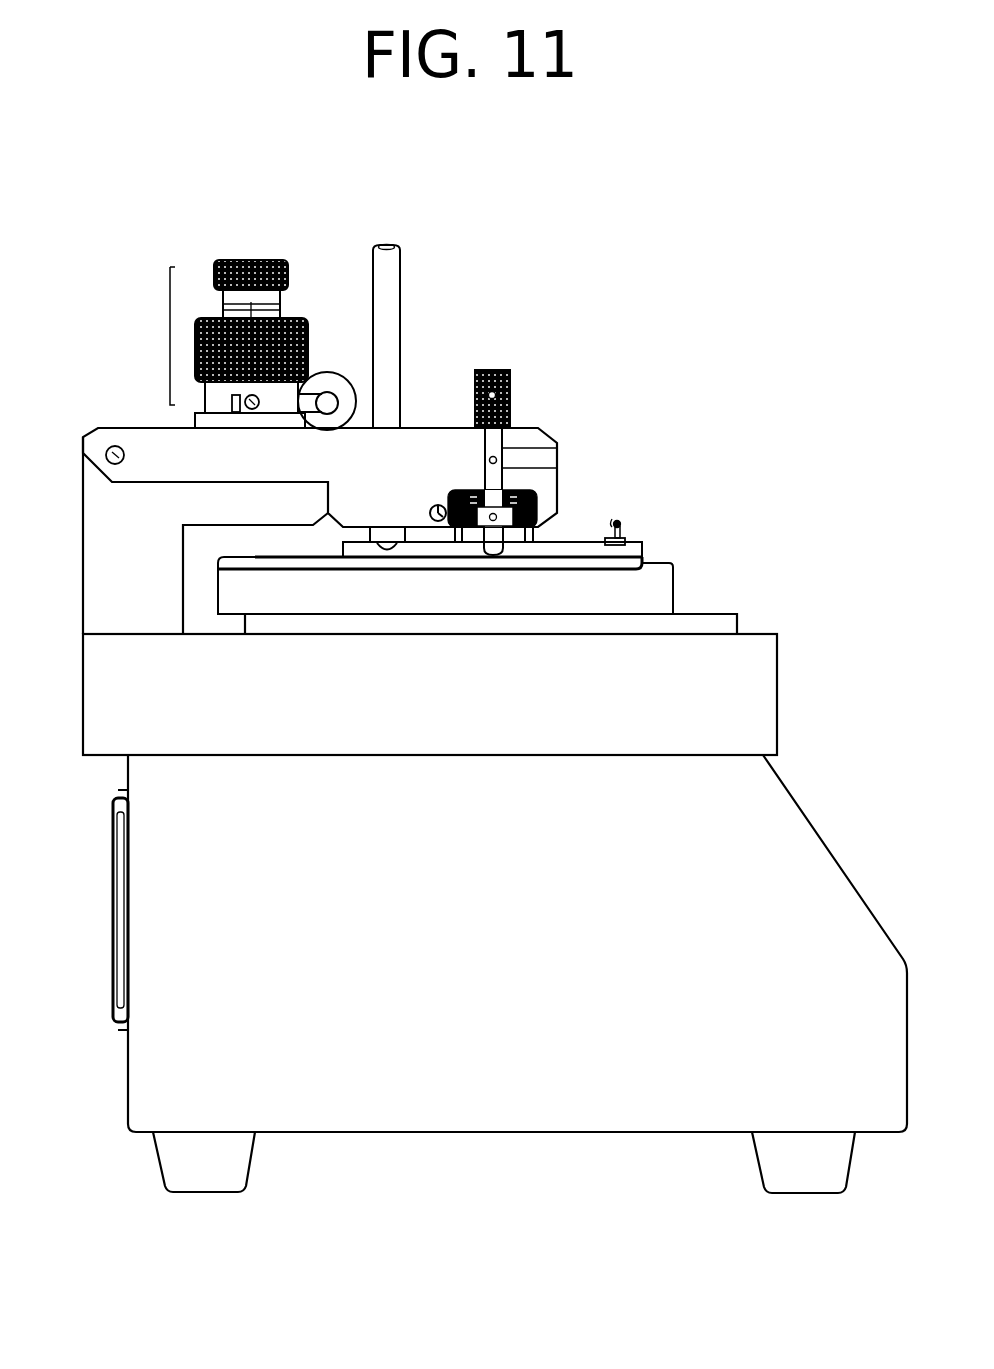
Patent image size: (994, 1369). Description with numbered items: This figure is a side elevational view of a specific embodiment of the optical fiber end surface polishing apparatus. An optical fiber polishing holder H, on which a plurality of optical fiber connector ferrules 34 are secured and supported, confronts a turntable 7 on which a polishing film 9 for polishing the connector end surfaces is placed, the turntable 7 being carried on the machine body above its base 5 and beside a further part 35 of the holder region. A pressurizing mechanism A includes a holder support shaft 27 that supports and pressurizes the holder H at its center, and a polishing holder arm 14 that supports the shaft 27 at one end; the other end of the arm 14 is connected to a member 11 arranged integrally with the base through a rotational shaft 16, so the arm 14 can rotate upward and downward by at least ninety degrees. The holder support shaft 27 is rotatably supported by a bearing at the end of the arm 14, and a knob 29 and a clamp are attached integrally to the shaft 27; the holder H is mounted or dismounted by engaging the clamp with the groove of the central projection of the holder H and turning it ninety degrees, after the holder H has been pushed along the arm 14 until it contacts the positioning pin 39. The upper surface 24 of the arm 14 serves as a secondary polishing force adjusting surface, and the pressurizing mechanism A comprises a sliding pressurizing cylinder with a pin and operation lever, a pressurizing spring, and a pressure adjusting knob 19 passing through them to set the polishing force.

The base 5 is at (748, 710).
The turntable 7 is at (657, 592).
The polishing film 9 is at (628, 563).
The member 11 is at (115, 558).
The polishing holder arm 14 is at (428, 438).
The rotational shaft 16 is at (112, 446).
The pressure adjusting knob 19 is at (260, 263).
The upper surface of the polishing holder arm 24 is at (256, 410).
The holder support shaft 27 is at (497, 441).
The knob 29 is at (493, 370).
The optical fiber connector ferrule 34 is at (619, 528).
The sensor base 35 is at (621, 542).
The positioning pin 39 is at (432, 511).
The pressurizing mechanism A is at (223, 347).
The polishing holder H is at (585, 517).